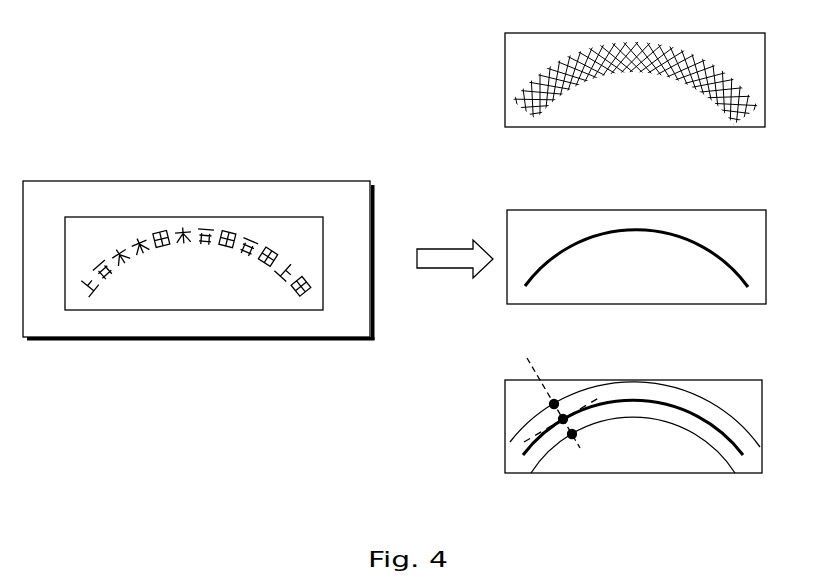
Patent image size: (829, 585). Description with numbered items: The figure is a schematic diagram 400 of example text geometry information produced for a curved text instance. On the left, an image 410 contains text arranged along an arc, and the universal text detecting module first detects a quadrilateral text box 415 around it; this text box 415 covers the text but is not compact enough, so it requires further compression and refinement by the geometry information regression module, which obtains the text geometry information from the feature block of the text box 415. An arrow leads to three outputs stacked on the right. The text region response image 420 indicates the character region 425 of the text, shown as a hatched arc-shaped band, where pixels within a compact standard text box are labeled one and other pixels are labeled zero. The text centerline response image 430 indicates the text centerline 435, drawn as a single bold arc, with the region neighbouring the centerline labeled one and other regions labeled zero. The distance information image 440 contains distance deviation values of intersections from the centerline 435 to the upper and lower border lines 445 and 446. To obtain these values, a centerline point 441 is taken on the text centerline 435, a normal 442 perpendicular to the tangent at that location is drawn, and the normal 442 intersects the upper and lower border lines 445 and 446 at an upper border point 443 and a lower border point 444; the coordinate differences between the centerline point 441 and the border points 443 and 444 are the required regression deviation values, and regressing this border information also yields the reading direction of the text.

The schematic diagram 400 is at (91, 60).
The image 410 is at (330, 182).
The quadrilateral text box 415 is at (283, 217).
The text region response image 420 is at (723, 33).
The character region 425 is at (712, 63).
The text centerline response image 430 is at (727, 209).
The text centerline 435 is at (708, 250).
The distance information image 440 is at (723, 380).
The centerline point 441 is at (559, 419).
The normal 442 is at (536, 372).
The upper border point 443 is at (551, 404).
The lower border point 444 is at (576, 436).
The upper border line 445 is at (712, 405).
The lower border line 446 is at (702, 447).